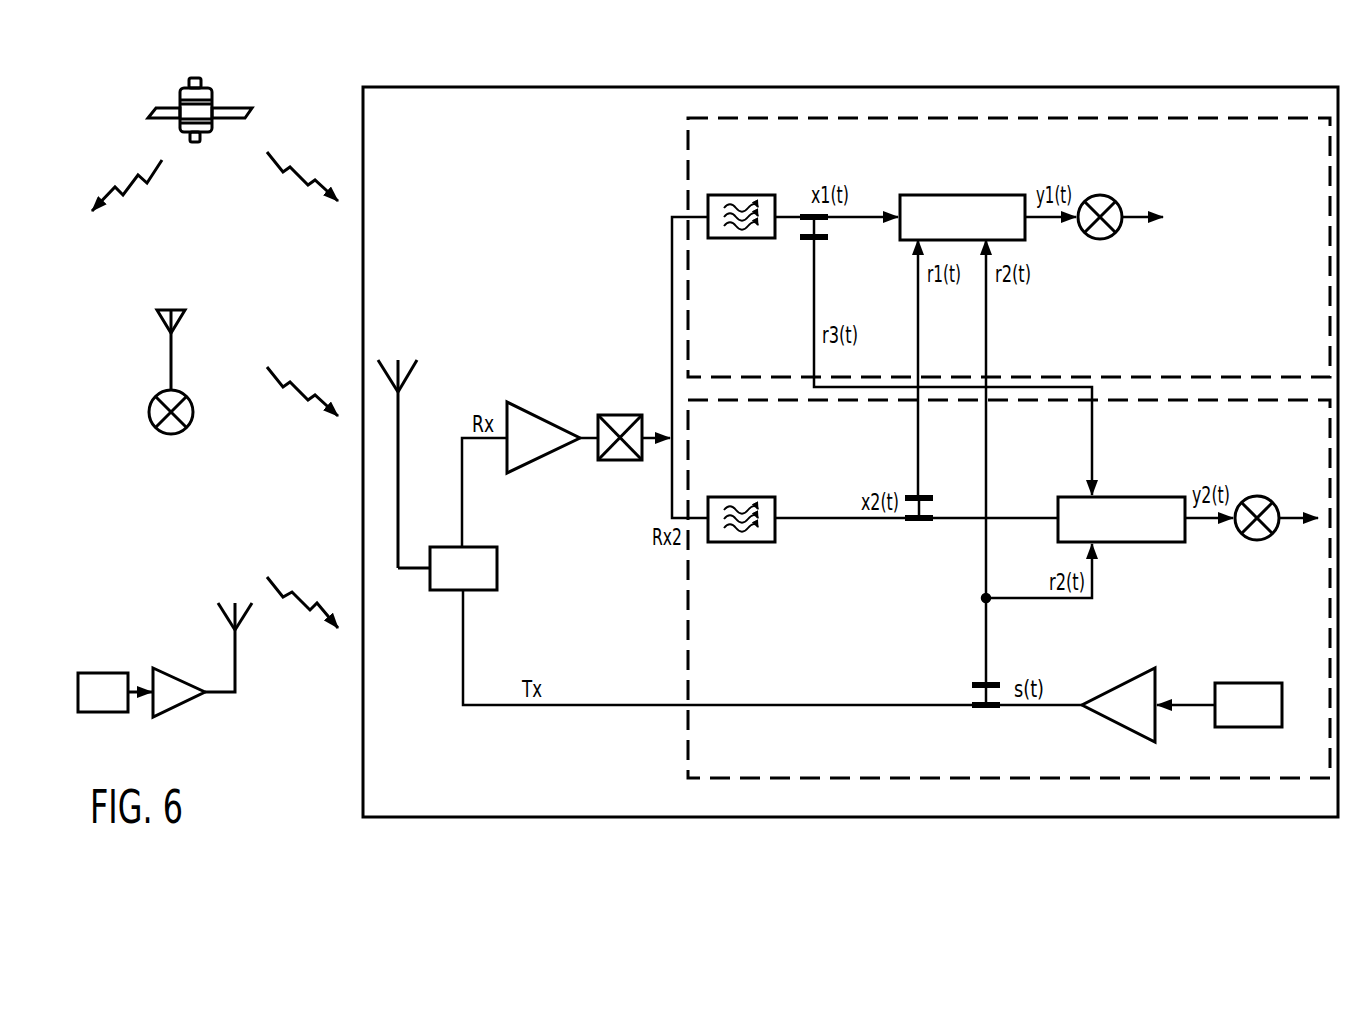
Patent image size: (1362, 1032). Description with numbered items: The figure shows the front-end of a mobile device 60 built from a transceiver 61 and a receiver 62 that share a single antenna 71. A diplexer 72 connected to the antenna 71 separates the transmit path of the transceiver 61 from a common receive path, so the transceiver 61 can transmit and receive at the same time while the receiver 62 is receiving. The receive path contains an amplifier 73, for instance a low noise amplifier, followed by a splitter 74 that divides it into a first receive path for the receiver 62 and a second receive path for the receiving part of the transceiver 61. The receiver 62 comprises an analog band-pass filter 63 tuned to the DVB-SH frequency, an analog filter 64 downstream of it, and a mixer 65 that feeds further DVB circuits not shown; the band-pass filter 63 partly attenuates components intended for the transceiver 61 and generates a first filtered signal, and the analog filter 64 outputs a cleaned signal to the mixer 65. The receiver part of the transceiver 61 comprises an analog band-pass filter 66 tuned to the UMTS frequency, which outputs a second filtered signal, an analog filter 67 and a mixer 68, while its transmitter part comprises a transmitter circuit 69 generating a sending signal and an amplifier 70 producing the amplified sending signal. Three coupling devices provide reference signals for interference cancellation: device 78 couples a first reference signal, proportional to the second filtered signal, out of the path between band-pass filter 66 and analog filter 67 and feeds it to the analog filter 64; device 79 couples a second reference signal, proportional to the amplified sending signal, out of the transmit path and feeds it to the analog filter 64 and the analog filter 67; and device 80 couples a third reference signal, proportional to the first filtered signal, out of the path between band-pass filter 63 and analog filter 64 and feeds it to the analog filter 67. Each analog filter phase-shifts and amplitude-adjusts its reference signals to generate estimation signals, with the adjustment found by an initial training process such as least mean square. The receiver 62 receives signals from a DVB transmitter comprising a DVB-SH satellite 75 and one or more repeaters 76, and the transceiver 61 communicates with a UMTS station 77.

The mobile device 60 is at (363, 758).
The transceiver 61 is at (688, 745).
The receiver 62 is at (688, 157).
The analog band-pass filter 63 is at (743, 195).
The analog filter 64 is at (997, 195).
The mixer 65 is at (1099, 195).
The analog band-pass filter 66 is at (743, 497).
The analog filter 67 is at (1137, 497).
The mixer 68 is at (1257, 496).
The transmitter circuit 69 is at (1247, 683).
The amplifier 70 is at (1119, 682).
The antenna 71 is at (400, 428).
The diplexer 72 is at (497, 568).
The amplifier 73 is at (539, 412).
The splitter 74 is at (620, 415).
The DVB-SH satellite 75 is at (227, 118).
The repeater 76 is at (193, 412).
The UMTS station 77 is at (133, 645).
The device 78 is at (925, 494).
The device 79 is at (991, 680).
The device 80 is at (822, 242).